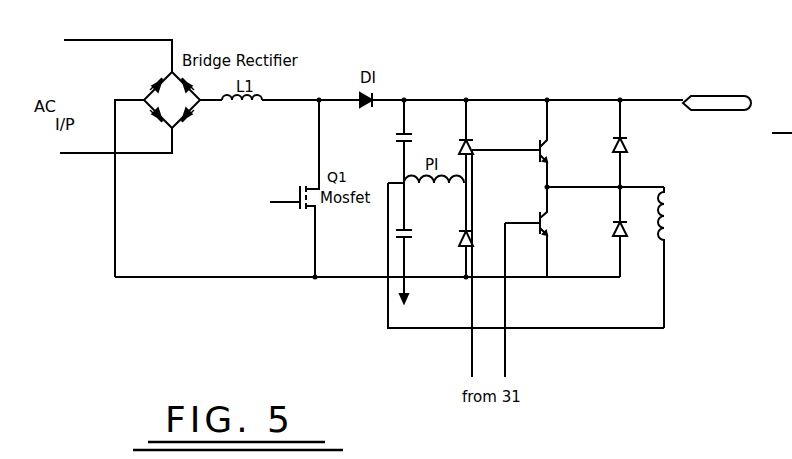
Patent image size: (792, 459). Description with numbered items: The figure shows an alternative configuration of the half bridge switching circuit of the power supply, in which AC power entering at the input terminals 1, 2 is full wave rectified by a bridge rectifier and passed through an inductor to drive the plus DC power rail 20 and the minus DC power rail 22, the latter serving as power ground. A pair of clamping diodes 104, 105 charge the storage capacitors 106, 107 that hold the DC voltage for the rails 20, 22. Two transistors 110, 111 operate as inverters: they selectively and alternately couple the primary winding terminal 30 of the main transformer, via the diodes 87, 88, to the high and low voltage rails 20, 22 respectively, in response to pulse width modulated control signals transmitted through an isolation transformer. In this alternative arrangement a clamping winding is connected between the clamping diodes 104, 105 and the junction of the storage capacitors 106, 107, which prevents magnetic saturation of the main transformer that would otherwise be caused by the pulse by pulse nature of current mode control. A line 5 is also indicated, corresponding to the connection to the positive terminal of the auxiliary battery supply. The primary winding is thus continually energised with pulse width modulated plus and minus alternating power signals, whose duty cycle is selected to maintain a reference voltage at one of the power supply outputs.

The AC input terminal 1 is at (106, 50).
The AC input terminal 2 is at (104, 146).
The line 5 is at (770, 133).
The DC power rail 20 is at (660, 105).
The DC power rail 22 is at (594, 281).
The primary winding terminal 30 is at (668, 187).
The diode 87 is at (631, 143).
The diode 88 is at (631, 232).
The clamping diode 104 is at (476, 143).
The clamping diode 105 is at (457, 247).
The storage capacitor 106 is at (417, 141).
The storage capacitor 107 is at (415, 241).
The transistor 110 is at (561, 143).
The transistor 111 is at (561, 232).